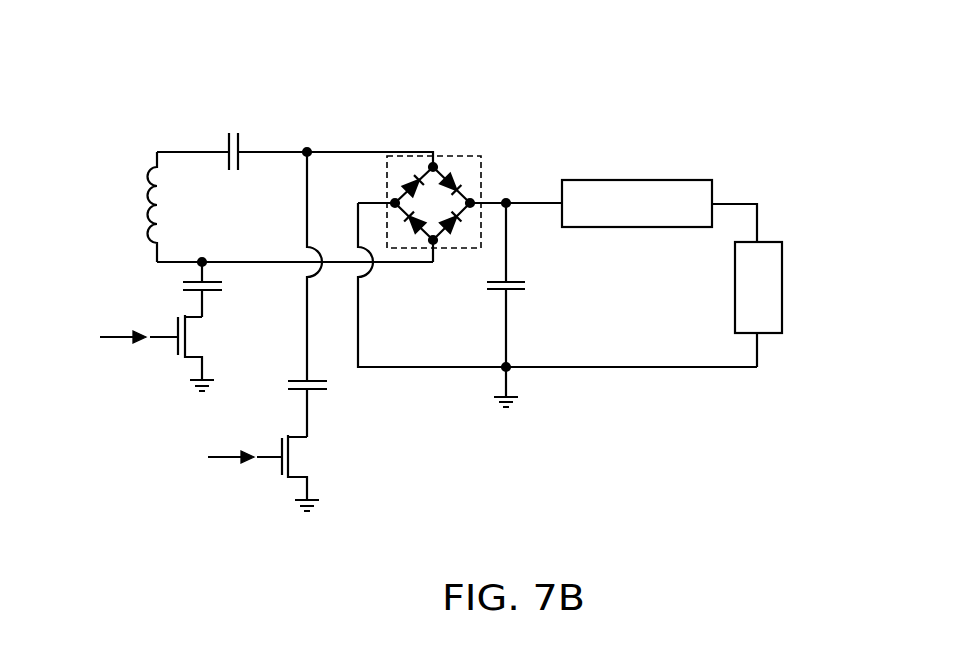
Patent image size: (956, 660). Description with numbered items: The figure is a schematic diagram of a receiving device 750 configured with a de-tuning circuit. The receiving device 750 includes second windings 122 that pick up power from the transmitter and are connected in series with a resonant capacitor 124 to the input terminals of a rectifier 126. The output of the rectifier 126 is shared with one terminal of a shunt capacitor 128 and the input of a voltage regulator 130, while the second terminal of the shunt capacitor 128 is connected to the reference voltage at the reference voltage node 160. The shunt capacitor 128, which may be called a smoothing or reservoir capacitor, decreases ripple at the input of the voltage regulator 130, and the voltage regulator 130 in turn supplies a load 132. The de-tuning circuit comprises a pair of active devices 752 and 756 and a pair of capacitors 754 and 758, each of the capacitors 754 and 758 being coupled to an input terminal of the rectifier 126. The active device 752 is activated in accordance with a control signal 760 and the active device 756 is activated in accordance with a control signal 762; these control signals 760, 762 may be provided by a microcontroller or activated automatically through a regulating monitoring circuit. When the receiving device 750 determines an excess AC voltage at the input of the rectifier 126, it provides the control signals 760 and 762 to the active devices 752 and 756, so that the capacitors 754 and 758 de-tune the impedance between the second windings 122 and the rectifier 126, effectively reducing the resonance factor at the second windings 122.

The receiving device 750 is at (748, 82).
The second windings 122 is at (162, 210).
The resonant capacitor 124 is at (230, 143).
The rectifier 126 is at (482, 163).
The shunt capacitor 128 is at (528, 284).
The voltage regulator 130 is at (646, 180).
The load 132 is at (734, 287).
The VREF node 160 is at (500, 372).
The active device 752 is at (205, 337).
The capacitor 754 is at (180, 283).
The active device 756 is at (315, 457).
The capacitor 758 is at (288, 387).
The control signal 760 is at (121, 332).
The control signal 762 is at (215, 460).